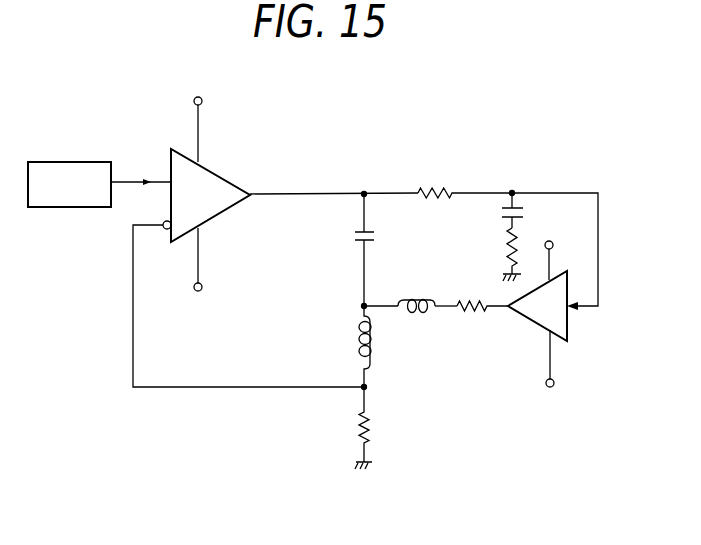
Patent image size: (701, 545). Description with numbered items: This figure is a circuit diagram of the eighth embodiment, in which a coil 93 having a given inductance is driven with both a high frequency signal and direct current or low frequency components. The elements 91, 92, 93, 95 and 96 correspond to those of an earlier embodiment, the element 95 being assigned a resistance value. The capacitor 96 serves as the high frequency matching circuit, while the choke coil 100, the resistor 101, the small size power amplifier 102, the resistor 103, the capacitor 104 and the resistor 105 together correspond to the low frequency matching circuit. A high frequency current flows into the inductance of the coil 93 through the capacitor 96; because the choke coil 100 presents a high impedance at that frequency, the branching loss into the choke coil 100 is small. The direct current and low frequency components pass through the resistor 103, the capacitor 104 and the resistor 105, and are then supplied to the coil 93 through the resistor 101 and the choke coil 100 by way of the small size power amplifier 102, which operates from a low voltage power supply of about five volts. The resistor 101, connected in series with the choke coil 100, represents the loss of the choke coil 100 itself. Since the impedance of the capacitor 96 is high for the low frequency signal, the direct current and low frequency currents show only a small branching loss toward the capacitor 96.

The signal generator 91 is at (67, 160).
The operational amplifier 92 is at (220, 173).
The coil 93 is at (357, 345).
The resistor 95 is at (360, 433).
The capacitor 96 is at (352, 236).
The choke coil 100 is at (417, 315).
The resistor 101 is at (468, 315).
The small size power amplifier 102 is at (538, 329).
The resistor 103 is at (438, 185).
The capacitor 104 is at (526, 210).
The resistor 105 is at (507, 238).